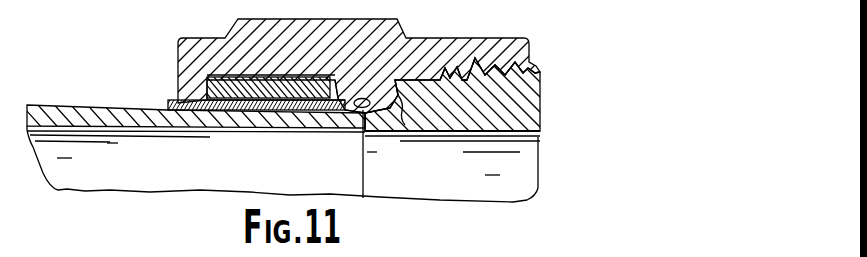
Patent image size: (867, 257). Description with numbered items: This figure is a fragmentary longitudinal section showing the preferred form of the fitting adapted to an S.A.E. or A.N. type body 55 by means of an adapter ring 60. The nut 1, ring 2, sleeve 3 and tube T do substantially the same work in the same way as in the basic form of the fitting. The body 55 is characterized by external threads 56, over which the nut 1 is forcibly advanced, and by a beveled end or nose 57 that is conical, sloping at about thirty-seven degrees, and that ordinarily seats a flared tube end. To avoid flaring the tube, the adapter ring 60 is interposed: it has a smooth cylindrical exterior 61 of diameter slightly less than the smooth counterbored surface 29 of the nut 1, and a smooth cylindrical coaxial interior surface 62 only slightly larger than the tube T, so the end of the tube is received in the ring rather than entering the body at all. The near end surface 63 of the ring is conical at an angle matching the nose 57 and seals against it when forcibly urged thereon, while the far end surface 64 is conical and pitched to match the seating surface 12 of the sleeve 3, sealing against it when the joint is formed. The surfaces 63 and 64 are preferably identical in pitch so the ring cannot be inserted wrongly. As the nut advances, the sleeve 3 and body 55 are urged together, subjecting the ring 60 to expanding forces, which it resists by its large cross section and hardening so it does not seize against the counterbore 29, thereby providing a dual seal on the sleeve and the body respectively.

The nut 1 is at (245, 17).
The tube T is at (60, 104).
The ring 2 is at (204, 90).
The sleeve 3 is at (203, 120).
The counterbored surface of the nut 29 is at (300, 78).
The cylindrical exterior of the adapter ring 61 is at (352, 86).
The adapter ring 60 is at (392, 90).
The near end surface of the adapter ring 63 is at (409, 78).
The external threads 56 is at (529, 54).
The body 55 is at (532, 114).
The seating surface of the sleeve 12 is at (305, 132).
The far end surface of the adapter ring 64 is at (349, 132).
The interior surface of the adapter ring 62 is at (380, 135).
The beveled end or nose 57 is at (420, 135).